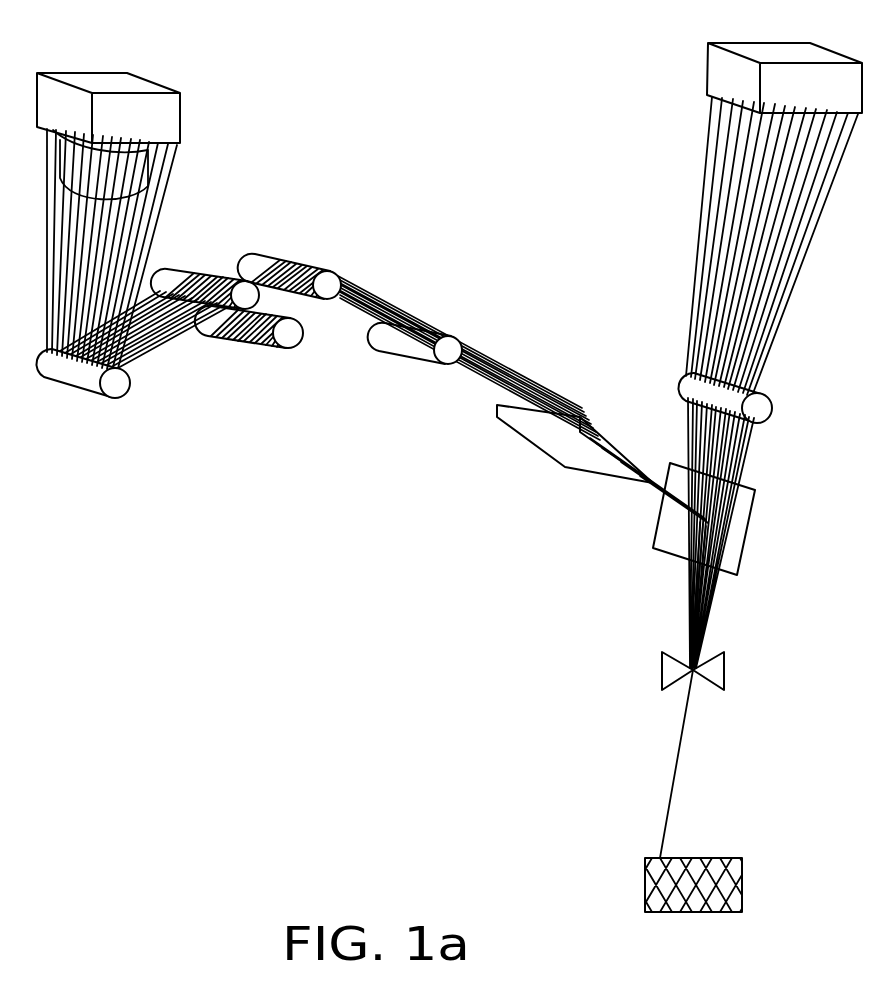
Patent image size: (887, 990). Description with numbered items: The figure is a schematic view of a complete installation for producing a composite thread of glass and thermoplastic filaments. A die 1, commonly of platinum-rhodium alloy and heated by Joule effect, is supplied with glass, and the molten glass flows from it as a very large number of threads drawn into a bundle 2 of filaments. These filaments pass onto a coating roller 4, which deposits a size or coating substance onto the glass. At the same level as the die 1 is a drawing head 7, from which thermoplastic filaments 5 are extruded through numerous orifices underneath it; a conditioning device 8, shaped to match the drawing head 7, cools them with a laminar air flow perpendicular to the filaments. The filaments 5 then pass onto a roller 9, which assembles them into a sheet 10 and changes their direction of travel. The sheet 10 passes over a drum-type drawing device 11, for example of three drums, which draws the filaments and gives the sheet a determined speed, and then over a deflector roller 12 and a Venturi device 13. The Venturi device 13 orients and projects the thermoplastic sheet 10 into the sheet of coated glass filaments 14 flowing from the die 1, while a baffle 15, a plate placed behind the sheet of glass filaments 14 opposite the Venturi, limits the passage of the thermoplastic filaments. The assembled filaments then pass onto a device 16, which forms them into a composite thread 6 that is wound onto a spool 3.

The die 1 is at (733, 78).
The bundle of filaments 2 is at (716, 213).
The spool 3 is at (646, 898).
The coating roller 4 is at (760, 410).
The thermoplastic filaments 5 is at (146, 228).
The composite thread 6 is at (676, 778).
The drawing head 7 is at (67, 112).
The conditioning device 8 is at (150, 150).
The roller 9 is at (114, 388).
The sheet 10 is at (158, 336).
The drum-type drawing device 11 is at (232, 268).
The deflector roller 12 is at (452, 351).
The Venturi device 13 is at (606, 432).
The sheet of glass filaments 14 is at (686, 446).
The baffle 15 is at (660, 530).
The assembling device 16 is at (662, 671).